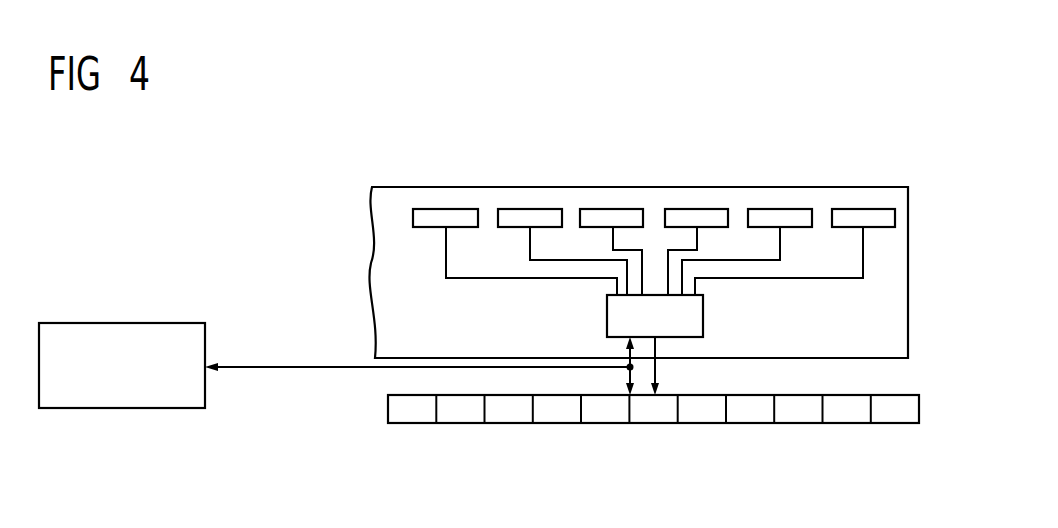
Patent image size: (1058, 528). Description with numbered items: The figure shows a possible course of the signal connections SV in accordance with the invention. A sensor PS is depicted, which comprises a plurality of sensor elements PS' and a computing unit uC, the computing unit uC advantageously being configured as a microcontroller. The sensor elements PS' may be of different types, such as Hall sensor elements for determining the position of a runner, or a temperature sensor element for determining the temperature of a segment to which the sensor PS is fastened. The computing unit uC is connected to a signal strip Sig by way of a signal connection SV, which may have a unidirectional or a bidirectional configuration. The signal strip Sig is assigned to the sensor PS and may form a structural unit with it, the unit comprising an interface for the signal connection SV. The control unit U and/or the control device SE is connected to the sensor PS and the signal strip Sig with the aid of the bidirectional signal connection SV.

The sensor PS is at (638, 222).
The sensor elements PS' is at (654, 171).
The computing unit uC is at (690, 318).
The signal connection SV is at (288, 364).
The control device SE is at (122, 404).
The control unit U is at (120, 383).
The signal strip Sig is at (798, 412).